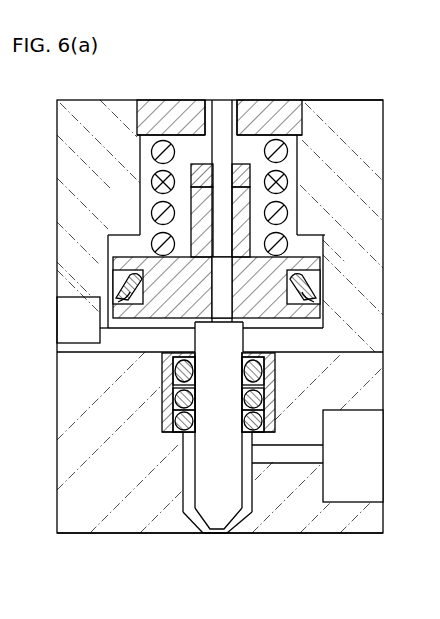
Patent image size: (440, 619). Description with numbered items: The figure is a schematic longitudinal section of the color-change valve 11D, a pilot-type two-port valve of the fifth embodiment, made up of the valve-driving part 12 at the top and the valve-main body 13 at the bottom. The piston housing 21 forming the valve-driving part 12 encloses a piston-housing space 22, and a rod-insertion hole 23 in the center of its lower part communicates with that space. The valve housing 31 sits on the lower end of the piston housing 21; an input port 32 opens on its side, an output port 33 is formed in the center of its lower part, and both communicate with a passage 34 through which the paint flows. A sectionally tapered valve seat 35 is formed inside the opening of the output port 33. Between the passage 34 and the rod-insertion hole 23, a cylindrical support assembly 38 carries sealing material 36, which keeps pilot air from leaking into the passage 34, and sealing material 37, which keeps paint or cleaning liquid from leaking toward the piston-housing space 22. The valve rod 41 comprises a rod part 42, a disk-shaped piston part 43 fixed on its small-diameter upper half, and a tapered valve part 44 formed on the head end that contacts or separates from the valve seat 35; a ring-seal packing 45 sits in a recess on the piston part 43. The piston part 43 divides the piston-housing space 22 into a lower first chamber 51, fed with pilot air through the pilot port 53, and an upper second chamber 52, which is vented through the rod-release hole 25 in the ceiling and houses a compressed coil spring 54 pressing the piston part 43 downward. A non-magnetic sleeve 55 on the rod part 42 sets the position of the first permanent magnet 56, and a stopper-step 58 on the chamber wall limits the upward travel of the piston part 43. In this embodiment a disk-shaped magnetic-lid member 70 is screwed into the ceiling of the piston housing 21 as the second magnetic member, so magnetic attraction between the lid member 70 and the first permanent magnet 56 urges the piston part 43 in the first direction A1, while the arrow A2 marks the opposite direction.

The color-change valve 11D is at (372, 83).
The valve-driving part 12 is at (57, 150).
The valve-main body 13 is at (57, 497).
The piston housing 21 is at (383, 145).
The piston-housing space 22 is at (148, 170).
The rod-insertion hole 23 is at (223, 340).
The rod-release hole 25 is at (217, 101).
The valve housing 31 is at (74, 434).
The input port 32 is at (359, 497).
The output port 33 is at (224, 535).
The passage 34 is at (245, 472).
The valve seat 35 is at (201, 531).
The sealing material 36 is at (173, 382).
The sealing material 37 is at (172, 404).
The support assembly 38 is at (266, 365).
The valve rod 41 is at (235, 102).
The rod part 42 is at (229, 460).
The piston part 43 is at (190, 303).
The valve part 44 is at (215, 537).
The ring-seal packing 45 is at (314, 287).
The first chamber 51 is at (130, 326).
The second chamber 52 is at (148, 216).
The pilot port 53 is at (80, 301).
The coil spring 54 is at (280, 178).
The sleeve 55 is at (240, 235).
The first permanent magnet 56 is at (168, 178).
The stopper-step 58 is at (110, 248).
The magnetic-lid member 70 is at (167, 115).
The first direction A1 is at (397, 178).
The downward direction A2 is at (397, 472).